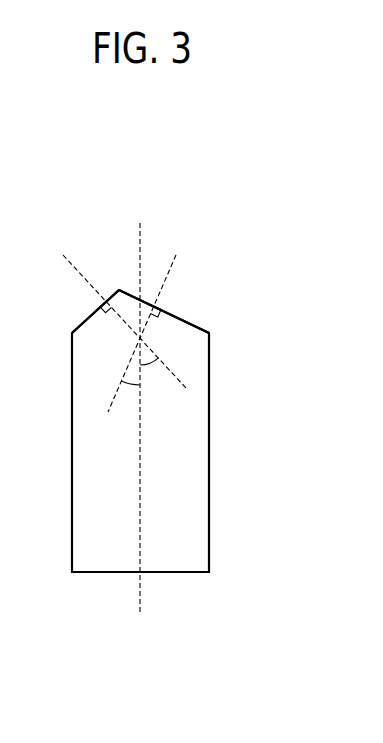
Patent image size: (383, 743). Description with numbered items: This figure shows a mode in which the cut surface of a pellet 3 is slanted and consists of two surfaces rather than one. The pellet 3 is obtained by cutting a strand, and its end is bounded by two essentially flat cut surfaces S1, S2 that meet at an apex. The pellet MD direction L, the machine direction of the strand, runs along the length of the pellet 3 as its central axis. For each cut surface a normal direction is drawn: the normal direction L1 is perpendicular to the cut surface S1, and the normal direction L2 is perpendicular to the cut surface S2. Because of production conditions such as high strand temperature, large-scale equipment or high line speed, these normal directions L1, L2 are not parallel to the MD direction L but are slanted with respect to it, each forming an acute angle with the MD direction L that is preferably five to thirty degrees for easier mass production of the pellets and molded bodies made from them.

The pellet 3 is at (198, 458).
The pellet cut surface S1 is at (195, 325).
The pellet cut surface S2 is at (78, 327).
The pellet MD direction L is at (140, 399).
The normal direction L1 is at (159, 313).
The normal direction L2 is at (116, 304).